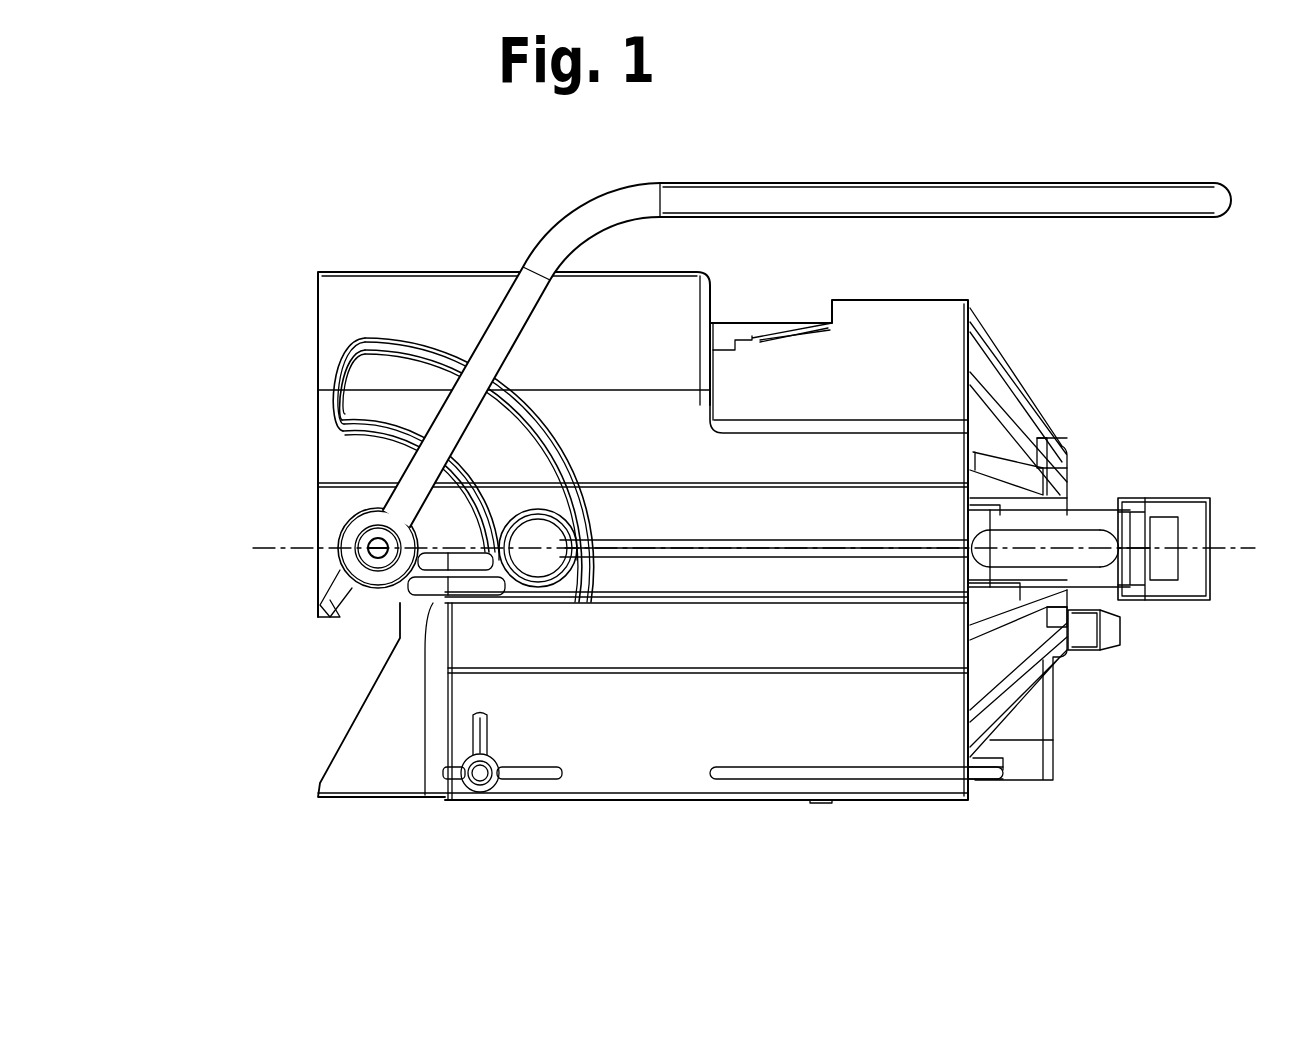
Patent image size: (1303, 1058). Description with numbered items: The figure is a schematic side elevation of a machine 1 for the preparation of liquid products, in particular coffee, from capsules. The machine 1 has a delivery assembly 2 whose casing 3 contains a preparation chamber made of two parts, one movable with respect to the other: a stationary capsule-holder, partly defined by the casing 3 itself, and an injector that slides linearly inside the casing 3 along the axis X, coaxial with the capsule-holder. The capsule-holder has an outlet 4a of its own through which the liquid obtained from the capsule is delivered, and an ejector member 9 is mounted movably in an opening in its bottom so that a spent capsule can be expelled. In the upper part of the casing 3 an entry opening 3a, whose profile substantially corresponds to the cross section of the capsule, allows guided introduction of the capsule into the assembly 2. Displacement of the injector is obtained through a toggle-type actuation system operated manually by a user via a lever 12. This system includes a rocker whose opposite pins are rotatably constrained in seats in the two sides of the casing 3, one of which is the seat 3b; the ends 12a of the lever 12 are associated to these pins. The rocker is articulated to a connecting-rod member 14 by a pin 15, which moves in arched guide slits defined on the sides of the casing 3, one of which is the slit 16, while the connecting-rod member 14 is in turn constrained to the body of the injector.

The machine 1 is at (196, 176).
The delivery assembly 2 is at (372, 228).
The casing 3 is at (333, 316).
The entry opening 3a is at (748, 338).
The seat 3b is at (362, 522).
The outlet 4a is at (1110, 632).
The ejector member 9 is at (1143, 500).
The lever 12 is at (998, 196).
The ends of the lever 12a is at (352, 556).
The connecting-rod member 14 is at (533, 506).
The pin 15 is at (539, 552).
The arched guide slit 16 is at (377, 398).
The axis X is at (1225, 546).